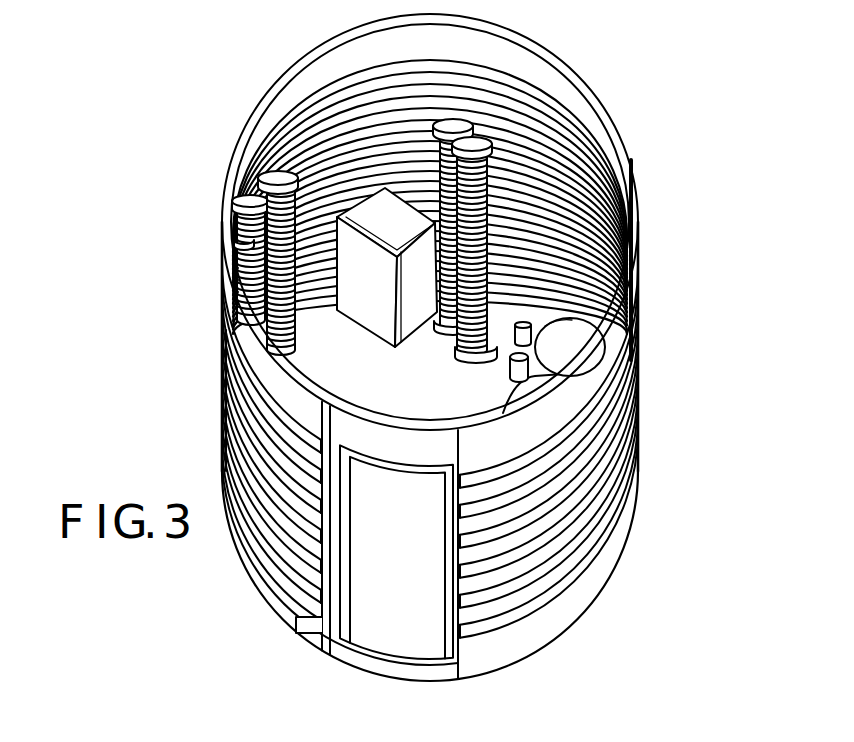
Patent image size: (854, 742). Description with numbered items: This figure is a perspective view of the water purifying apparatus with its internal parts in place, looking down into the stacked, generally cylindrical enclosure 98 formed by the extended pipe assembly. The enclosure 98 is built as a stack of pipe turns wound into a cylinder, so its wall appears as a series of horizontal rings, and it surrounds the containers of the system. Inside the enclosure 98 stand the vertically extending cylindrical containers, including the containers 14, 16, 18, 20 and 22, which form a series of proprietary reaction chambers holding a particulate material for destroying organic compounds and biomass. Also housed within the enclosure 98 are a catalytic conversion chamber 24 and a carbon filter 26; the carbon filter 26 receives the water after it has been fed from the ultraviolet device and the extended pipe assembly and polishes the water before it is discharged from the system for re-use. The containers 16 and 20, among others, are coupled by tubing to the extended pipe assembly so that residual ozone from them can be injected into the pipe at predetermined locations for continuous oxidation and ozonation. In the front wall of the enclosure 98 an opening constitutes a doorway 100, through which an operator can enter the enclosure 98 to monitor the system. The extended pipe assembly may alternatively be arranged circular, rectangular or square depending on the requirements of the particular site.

The container 14 is at (234, 272).
The container 16 is at (234, 240).
The container 18 is at (236, 216).
The container 20 is at (250, 196).
The container 22 is at (274, 172).
The catalytic conversion chamber 24 is at (468, 120).
The carbon filter 26 is at (484, 140).
The enclosure 98 is at (670, 203).
The doorway 100 is at (297, 619).